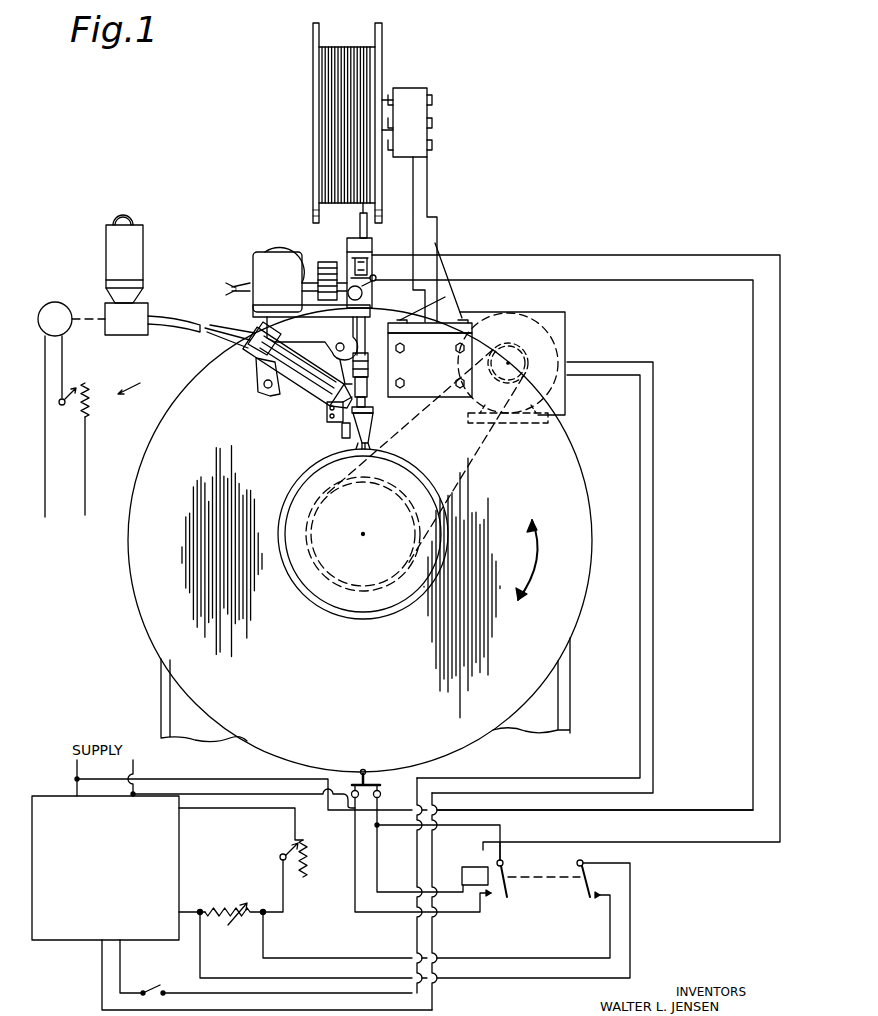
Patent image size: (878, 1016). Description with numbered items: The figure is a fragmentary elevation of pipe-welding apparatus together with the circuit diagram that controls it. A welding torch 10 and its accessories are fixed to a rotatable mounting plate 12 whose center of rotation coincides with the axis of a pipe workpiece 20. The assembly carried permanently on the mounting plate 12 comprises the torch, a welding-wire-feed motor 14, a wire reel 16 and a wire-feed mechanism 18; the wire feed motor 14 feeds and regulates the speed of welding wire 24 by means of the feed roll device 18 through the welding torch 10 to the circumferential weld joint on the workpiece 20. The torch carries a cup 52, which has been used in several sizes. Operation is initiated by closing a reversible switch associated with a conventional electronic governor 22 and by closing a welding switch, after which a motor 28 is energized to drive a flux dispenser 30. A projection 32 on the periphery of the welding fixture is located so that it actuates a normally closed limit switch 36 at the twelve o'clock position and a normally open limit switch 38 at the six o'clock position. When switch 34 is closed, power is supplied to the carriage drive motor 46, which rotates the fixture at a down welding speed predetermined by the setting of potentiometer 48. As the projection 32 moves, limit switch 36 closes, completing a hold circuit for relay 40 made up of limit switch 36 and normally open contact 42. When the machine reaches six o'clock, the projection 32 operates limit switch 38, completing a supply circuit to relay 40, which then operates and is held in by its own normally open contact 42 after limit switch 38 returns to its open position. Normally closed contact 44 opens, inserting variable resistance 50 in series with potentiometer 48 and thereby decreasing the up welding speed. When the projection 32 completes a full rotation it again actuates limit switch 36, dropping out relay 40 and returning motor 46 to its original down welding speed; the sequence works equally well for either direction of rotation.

The welding torch 10 is at (308, 377).
The rotatable mounting plate 12 is at (158, 598).
The welding-wire-feed motor 14 is at (280, 246).
The wire reel 16 is at (316, 115).
The wire-feed mechanism 18 is at (370, 265).
The pipe workpiece 20 is at (317, 604).
The electronic governor 22 is at (66, 925).
The welding wire 24 is at (360, 208).
The motor 28 is at (52, 302).
The flux dispenser 30 is at (135, 312).
The projection 32 is at (364, 296).
The switch 34 is at (151, 981).
The normally closed limit switch 36 is at (368, 285).
The normally open limit switch 38 is at (355, 816).
The relay 40 is at (476, 870).
The normally open contact 42 is at (505, 898).
The normally closed contact 44 is at (585, 898).
The carriage drive motor 46 is at (542, 350).
The potentiometer 48 is at (295, 838).
The variable resistance 50 is at (250, 900).
The cup 52 is at (356, 442).